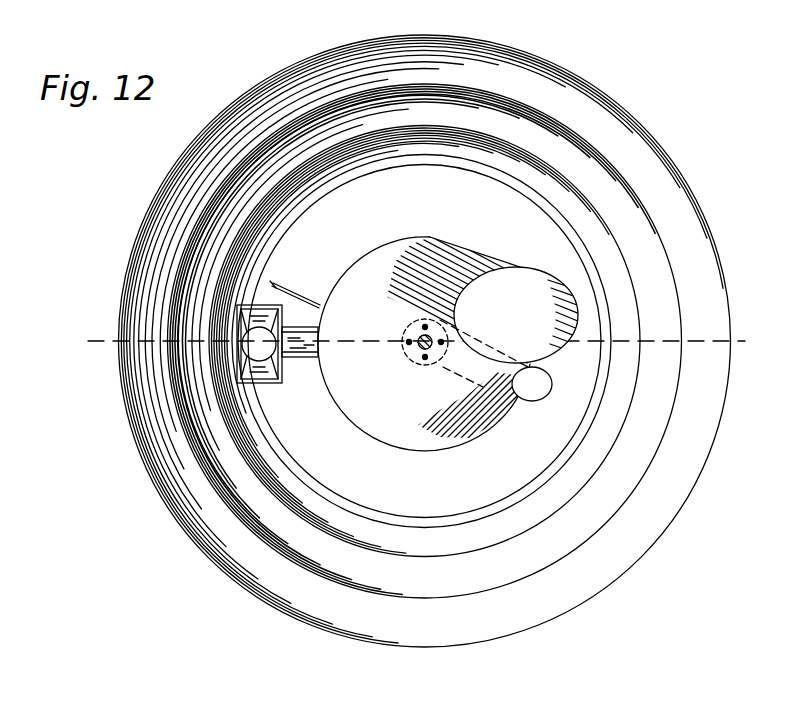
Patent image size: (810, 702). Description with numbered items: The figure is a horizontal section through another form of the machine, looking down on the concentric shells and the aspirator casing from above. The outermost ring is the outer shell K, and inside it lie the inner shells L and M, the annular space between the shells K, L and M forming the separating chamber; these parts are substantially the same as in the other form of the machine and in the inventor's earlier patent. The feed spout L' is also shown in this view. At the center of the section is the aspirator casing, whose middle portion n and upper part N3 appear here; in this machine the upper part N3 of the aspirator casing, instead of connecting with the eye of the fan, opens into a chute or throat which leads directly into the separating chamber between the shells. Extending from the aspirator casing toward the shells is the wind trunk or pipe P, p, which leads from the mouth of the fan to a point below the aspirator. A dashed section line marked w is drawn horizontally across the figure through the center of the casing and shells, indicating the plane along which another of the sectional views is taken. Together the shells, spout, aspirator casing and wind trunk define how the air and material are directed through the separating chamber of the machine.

The outer shell K is at (726, 433).
The inner shell L is at (425, 341).
The inner shell M is at (274, 497).
The feed spout L' is at (424, 341).
The upper part of the aspirator casing N3 is at (464, 321).
The middle portion of the aspirator casing n is at (532, 384).
The wind trunk P is at (278, 332).
The wind trunk pipe p is at (300, 360).
The axis line w is at (411, 341).